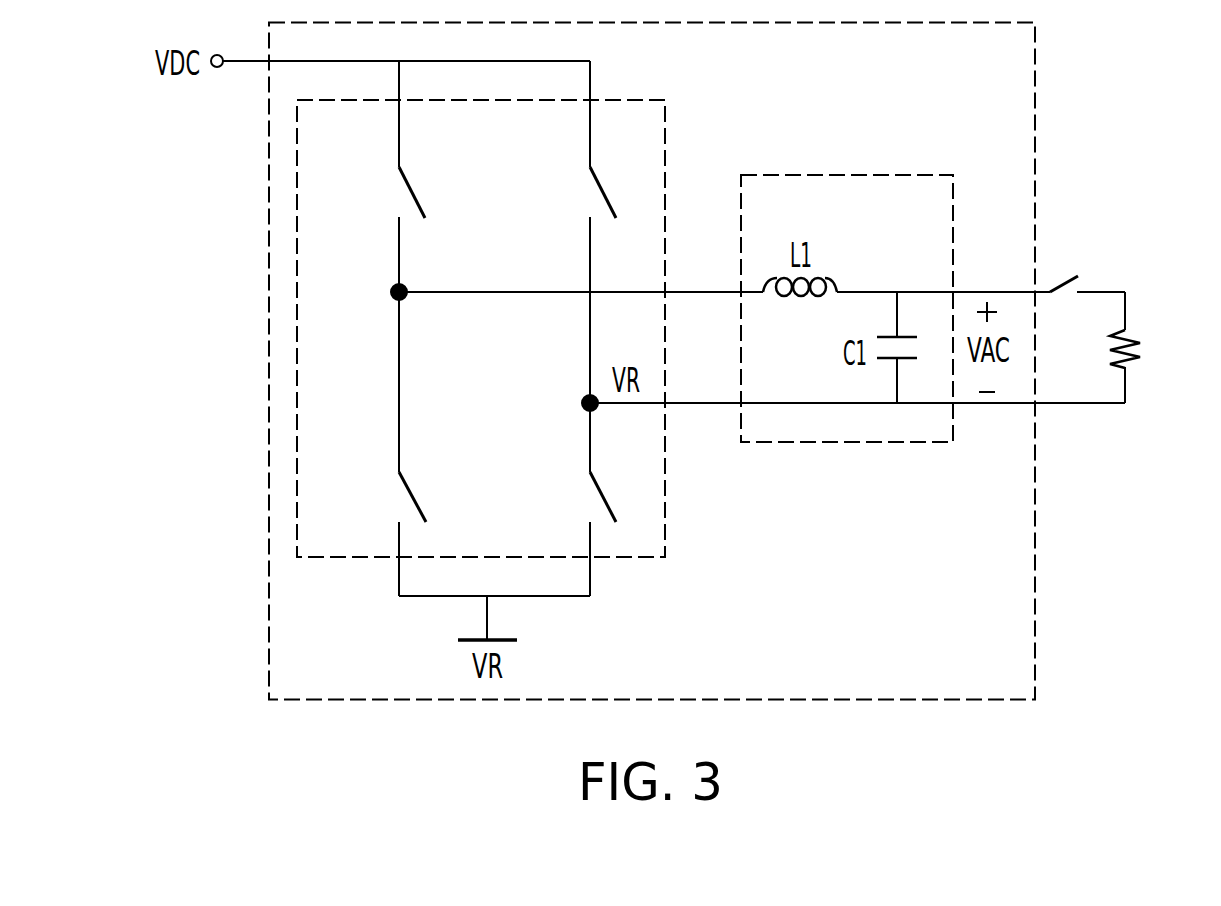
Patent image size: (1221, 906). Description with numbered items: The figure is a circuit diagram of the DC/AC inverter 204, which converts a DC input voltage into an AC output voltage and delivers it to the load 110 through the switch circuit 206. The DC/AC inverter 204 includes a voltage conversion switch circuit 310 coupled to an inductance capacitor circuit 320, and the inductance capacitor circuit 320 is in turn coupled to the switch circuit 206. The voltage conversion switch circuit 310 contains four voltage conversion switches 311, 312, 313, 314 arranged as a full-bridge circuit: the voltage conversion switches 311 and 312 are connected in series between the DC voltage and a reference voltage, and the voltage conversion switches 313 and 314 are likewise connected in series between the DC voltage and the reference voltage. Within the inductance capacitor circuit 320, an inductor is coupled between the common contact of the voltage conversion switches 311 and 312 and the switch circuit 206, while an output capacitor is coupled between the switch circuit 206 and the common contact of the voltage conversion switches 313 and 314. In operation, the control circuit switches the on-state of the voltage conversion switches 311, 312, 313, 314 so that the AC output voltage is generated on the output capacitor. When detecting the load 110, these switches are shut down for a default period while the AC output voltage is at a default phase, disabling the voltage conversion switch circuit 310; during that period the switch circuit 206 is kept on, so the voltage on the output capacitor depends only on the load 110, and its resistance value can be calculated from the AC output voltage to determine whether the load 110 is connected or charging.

The DC/AC inverter 204 is at (1035, 582).
The voltage conversion switch circuit 310 is at (637, 557).
The voltage conversion switch 311 is at (386, 189).
The voltage conversion switch 312 is at (387, 490).
The voltage conversion switch 313 is at (576, 190).
The voltage conversion switch 314 is at (577, 490).
The inductance capacitor circuit 320 is at (923, 442).
The switch circuit 206 is at (1083, 265).
The load 110 is at (1146, 348).